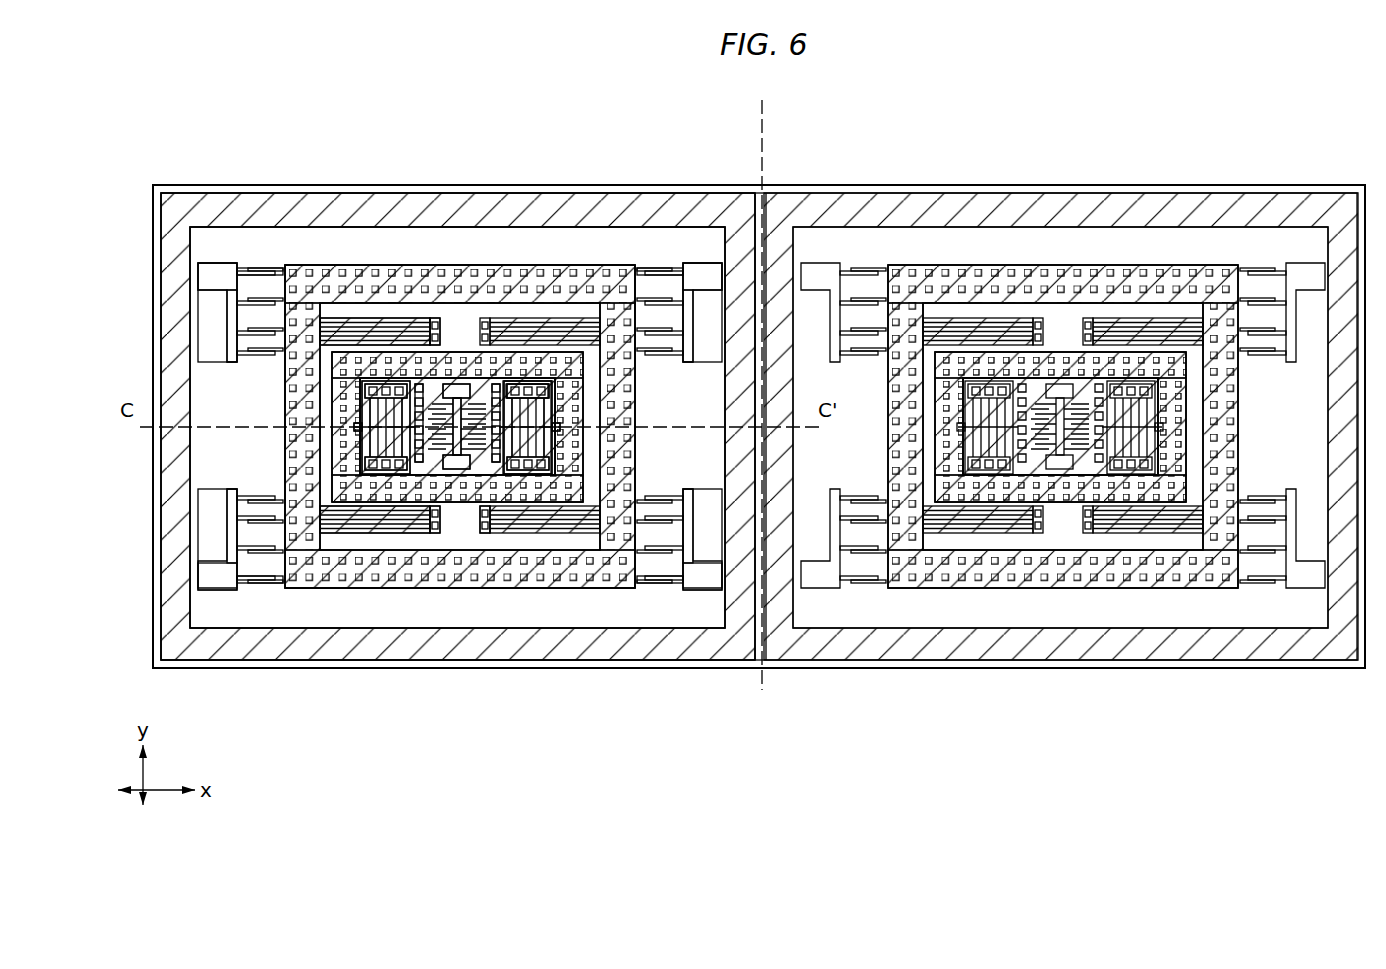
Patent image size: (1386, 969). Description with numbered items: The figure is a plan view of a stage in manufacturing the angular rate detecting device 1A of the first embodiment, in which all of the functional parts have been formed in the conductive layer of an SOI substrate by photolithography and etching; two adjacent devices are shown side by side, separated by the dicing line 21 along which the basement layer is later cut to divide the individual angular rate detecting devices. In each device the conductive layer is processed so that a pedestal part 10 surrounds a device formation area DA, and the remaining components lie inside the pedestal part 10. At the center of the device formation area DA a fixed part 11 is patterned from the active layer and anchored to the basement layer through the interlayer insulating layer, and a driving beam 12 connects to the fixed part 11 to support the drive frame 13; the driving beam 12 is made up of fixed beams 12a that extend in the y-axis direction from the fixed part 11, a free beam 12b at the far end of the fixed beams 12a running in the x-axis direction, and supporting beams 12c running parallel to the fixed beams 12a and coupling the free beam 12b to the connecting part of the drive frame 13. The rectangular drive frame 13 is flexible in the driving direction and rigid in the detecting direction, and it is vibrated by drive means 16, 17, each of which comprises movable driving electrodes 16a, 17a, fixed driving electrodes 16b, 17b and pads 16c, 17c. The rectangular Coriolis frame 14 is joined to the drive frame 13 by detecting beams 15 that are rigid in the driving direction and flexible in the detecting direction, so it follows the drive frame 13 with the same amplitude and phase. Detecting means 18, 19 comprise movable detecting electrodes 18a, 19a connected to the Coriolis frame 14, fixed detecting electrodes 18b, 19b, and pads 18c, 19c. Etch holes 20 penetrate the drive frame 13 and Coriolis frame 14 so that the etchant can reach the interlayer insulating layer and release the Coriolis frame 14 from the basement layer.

The angular rate detecting device 1A is at (617, 178).
The pedestal part 10 is at (508, 207).
The device formation area DA is at (375, 245).
The dicing line 21 is at (763, 170).
The etch hole 20 is at (303, 266).
The detecting beam 15 is at (342, 318).
The drive means 16 is at (436, 322).
The movable driving electrode 16a is at (433, 525).
The fixed driving electrode 16b is at (437, 370).
The pad 16c is at (456, 382).
The drive frame 13 is at (540, 395).
The Coriolis frame 14 is at (548, 400).
The drive means 17 is at (478, 490).
The movable driving electrode 17a is at (500, 475).
The fixed driving electrode 17b is at (492, 525).
The pad 17c is at (455, 472).
The fixed part 11 is at (360, 405).
The driving beam 12 is at (362, 385).
The fixed beam 12a is at (365, 458).
The free beam 12b is at (380, 470).
The supporting beam 12c is at (356, 428).
The detecting means 18 is at (243, 238).
The movable detecting electrode 18a is at (280, 270).
The fixed detecting electrode 18b is at (235, 356).
The pad 18c is at (198, 272).
The detecting means 19 is at (259, 608).
The movable detecting electrode 19a is at (285, 580).
The fixed detecting electrode 19b is at (235, 520).
The pad 19c is at (200, 592).